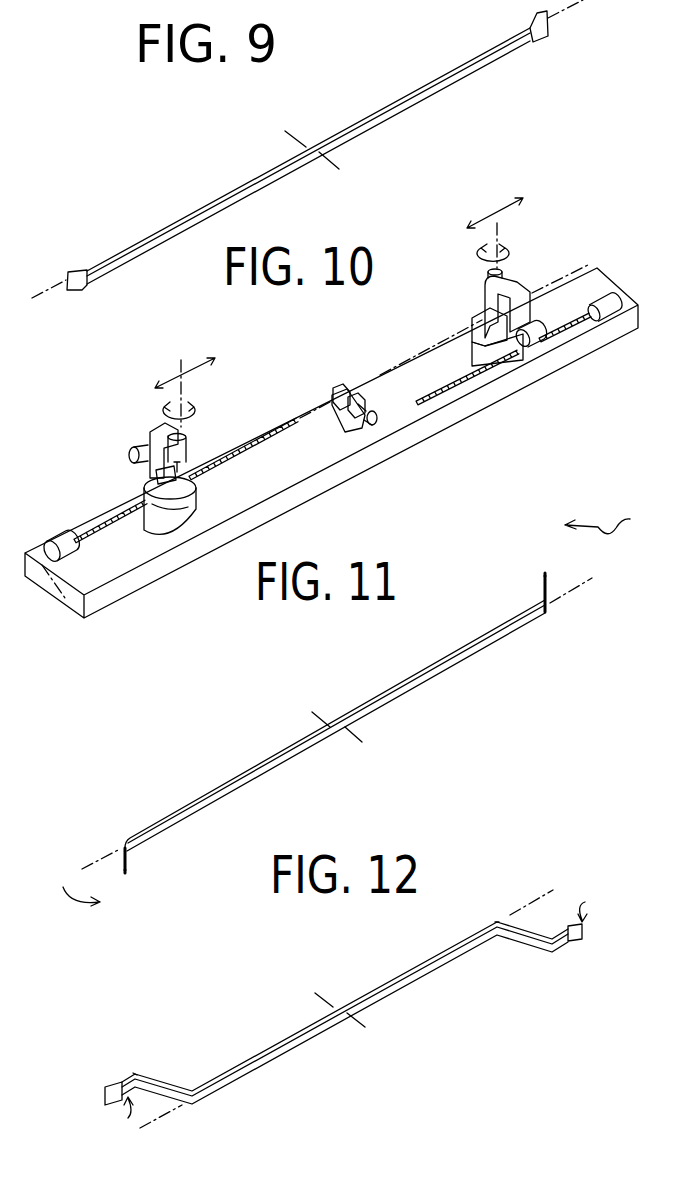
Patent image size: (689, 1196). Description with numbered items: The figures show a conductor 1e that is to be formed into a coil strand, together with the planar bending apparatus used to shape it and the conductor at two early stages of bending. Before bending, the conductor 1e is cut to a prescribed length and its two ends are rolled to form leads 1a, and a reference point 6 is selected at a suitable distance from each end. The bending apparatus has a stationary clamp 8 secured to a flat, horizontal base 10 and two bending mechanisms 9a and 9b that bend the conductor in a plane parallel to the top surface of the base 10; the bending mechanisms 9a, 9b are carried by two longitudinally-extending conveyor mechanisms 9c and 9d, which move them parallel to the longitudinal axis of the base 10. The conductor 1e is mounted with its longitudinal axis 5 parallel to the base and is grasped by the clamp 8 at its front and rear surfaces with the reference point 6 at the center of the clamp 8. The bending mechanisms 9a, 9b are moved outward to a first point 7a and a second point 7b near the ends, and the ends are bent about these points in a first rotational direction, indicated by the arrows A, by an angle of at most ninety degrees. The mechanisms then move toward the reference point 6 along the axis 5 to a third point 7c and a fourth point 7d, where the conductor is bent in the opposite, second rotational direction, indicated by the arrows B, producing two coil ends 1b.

In FIG. 9, the leads 1a is at (78, 269).
In FIG. 11, the leads 1a is at (124, 874).
In FIG. 12, the coil ends 1b is at (163, 1081).
In FIG. 9, the conductor 1e is at (488, 66).
In FIG. 11, the conductor 1e is at (496, 640).
In FIG. 12, the conductor 1e is at (430, 977).
In FIG. 9, the longitudinal axis 5 is at (33, 297).
In FIG. 10, the longitudinal axis 5 is at (398, 364).
In FIG. 11, the longitudinal axis 5 is at (88, 868).
In FIG. 12, the longitudinal axis 5 is at (172, 1121).
In FIG. 9, the reference point 6 is at (310, 148).
In FIG. 11, the reference point 6 is at (328, 722).
In FIG. 12, the reference point 6 is at (338, 1008).
In FIG. 11, the first point 7a is at (130, 853).
In FIG. 11, the second point 7b is at (543, 605).
In FIG. 12, the third point 7c is at (193, 1090).
In FIG. 12, the fourth point 7d is at (498, 931).
In FIG. 10, the stationary clamp 8 is at (348, 388).
In FIG. 10, the bending mechanism 9a is at (184, 442).
In FIG. 10, the bending mechanism 9b is at (520, 283).
In FIG. 10, the conveyor mechanism 9c is at (58, 533).
In FIG. 10, the conveyor mechanism 9d is at (612, 295).
In FIG. 10, the base 10 is at (574, 354).
In FIG. 11, the first rotational direction arrows A is at (78, 902).
In FIG. 12, the second rotational direction arrows B is at (128, 1118).